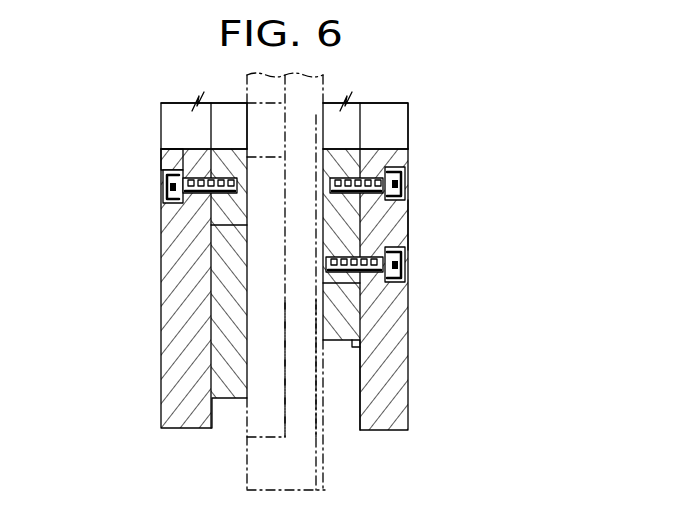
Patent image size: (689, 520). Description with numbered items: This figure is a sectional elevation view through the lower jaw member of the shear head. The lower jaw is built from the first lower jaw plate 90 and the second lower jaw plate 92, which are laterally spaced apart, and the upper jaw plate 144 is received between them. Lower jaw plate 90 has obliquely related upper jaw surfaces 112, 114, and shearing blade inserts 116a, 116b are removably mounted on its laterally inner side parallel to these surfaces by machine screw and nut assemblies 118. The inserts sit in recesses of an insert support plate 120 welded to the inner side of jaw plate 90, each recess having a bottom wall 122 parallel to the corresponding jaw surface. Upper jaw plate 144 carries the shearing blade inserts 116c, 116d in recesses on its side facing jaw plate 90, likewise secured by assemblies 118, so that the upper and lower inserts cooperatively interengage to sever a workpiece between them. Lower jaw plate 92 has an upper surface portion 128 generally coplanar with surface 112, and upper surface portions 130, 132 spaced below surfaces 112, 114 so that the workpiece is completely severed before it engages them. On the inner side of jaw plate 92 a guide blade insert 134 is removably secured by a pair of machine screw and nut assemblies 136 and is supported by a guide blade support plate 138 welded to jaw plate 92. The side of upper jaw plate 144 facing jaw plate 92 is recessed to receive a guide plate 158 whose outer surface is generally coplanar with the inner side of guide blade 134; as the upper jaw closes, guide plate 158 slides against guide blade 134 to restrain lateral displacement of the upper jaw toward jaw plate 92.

The first lower jaw plate 90 is at (164, 315).
The second lower jaw plate 92 is at (398, 300).
The upper jaw surface 112 is at (190, 147).
The upper jaw surface 114 is at (187, 117).
The shearing blade insert 116a is at (165, 160).
The shearing blade insert 116b is at (230, 117).
The shearing blade insert 116c is at (270, 372).
The shearing blade insert 116d is at (277, 108).
The machine screw and nut assemblies 118 is at (165, 192).
The insert support plate 120 is at (228, 366).
The bottom wall 122 is at (212, 217).
The upper surface portion 128 is at (383, 151).
The upper surface portion 130 is at (409, 223).
The upper surface portion 132 is at (398, 122).
The guide blade insert 134 is at (373, 233).
The machine screw and nut assemblies 136 is at (395, 178).
The guide blade support plate 138 is at (347, 325).
The upper jaw plate 144 is at (247, 465).
The guide plate 158 is at (325, 458).